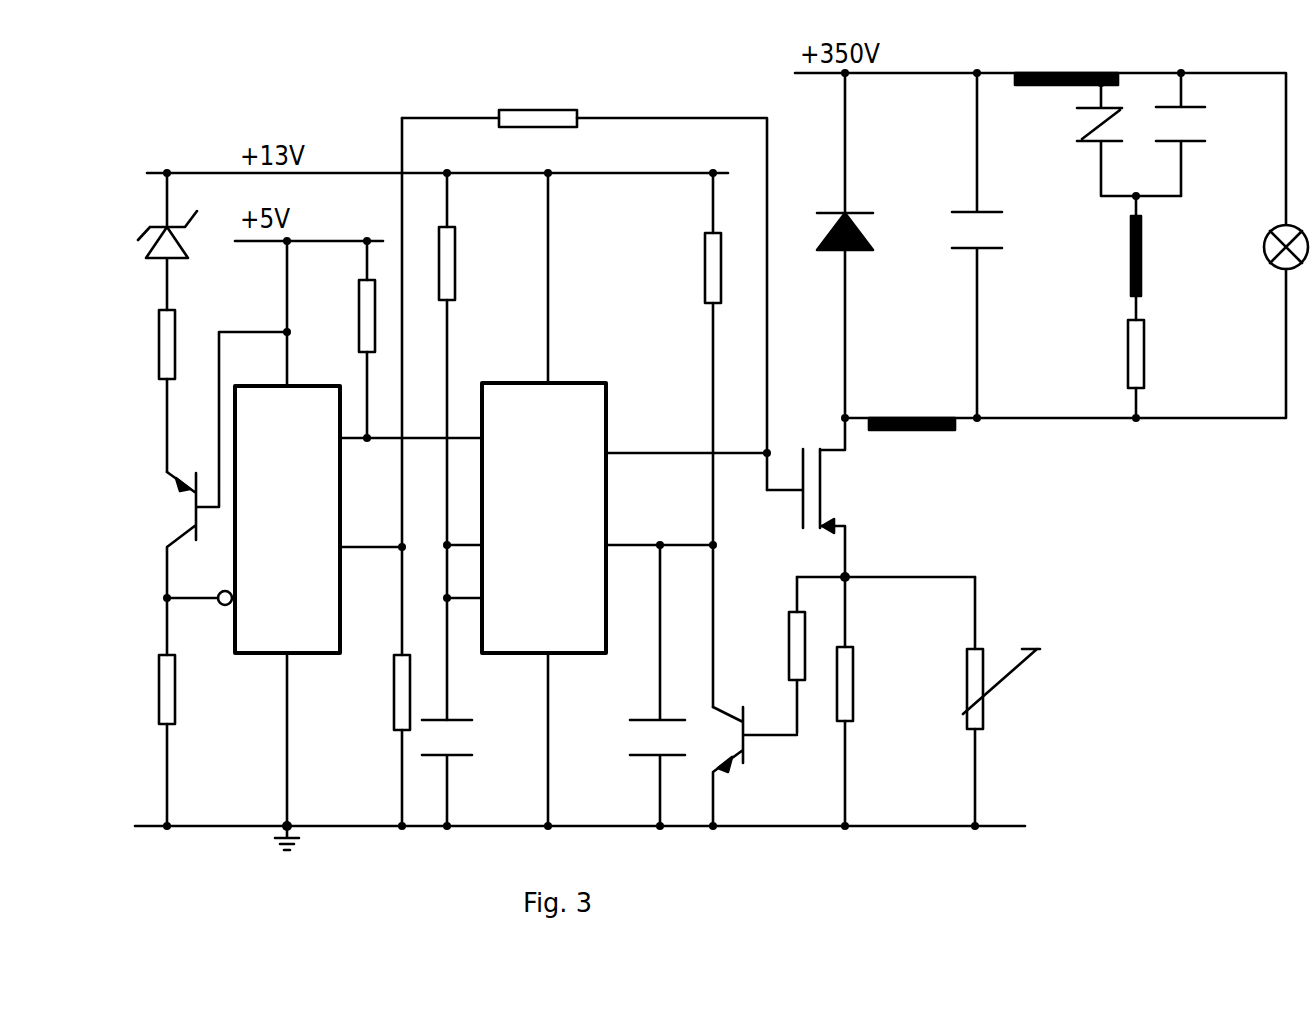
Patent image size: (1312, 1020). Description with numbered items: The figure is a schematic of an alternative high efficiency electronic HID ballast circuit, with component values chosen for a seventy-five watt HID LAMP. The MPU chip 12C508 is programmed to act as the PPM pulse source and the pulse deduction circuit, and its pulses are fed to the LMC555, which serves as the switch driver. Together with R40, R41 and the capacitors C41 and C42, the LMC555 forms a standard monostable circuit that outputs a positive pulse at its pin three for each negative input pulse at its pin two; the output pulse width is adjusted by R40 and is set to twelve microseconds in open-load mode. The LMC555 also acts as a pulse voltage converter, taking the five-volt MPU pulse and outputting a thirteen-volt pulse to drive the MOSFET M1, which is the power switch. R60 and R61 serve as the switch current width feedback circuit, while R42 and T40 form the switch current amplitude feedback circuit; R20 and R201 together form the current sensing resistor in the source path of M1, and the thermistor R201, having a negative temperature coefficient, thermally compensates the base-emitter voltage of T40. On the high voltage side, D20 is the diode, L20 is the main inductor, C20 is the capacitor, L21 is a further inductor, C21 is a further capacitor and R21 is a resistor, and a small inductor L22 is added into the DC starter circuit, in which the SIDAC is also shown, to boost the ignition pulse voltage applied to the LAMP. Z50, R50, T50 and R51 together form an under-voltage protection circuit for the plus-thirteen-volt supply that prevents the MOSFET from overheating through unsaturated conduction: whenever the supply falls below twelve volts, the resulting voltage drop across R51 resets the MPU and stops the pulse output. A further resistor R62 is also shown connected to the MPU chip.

The zener diode Z50 is at (142, 241).
The resistor R50 is at (134, 391).
The transistor T50 is at (191, 465).
The resistor R51 is at (135, 712).
The resistor 10K R62 is at (336, 339).
The resistor R61 is at (365, 472).
The MPU chip 12C508 is at (324, 533).
The switch driver LMC555 is at (607, 499).
The resistor R60 is at (584, 282).
The resistor R41 is at (482, 446).
The resistor R40 is at (684, 440).
The capacitor C41 is at (483, 767).
The capacitor 100P C42 is at (624, 685).
The transistor T40 is at (759, 766).
The resistor R42 is at (770, 655).
The MOSFET M1 is at (871, 497).
The resistor R20 is at (876, 701).
The thermistor R201 is at (1007, 701).
The diode D20 is at (830, 245).
The capacitor C20 is at (950, 245).
The inductor L20 is at (957, 445).
The inductor L21 is at (1059, 62).
The SIDAC 300V SIDAC is at (1095, 145).
The capacitor C21 is at (1212, 142).
The small inductor L22 is at (1098, 258).
The resistor R21 is at (1099, 369).
The HID lamp LAMP is at (1256, 294).